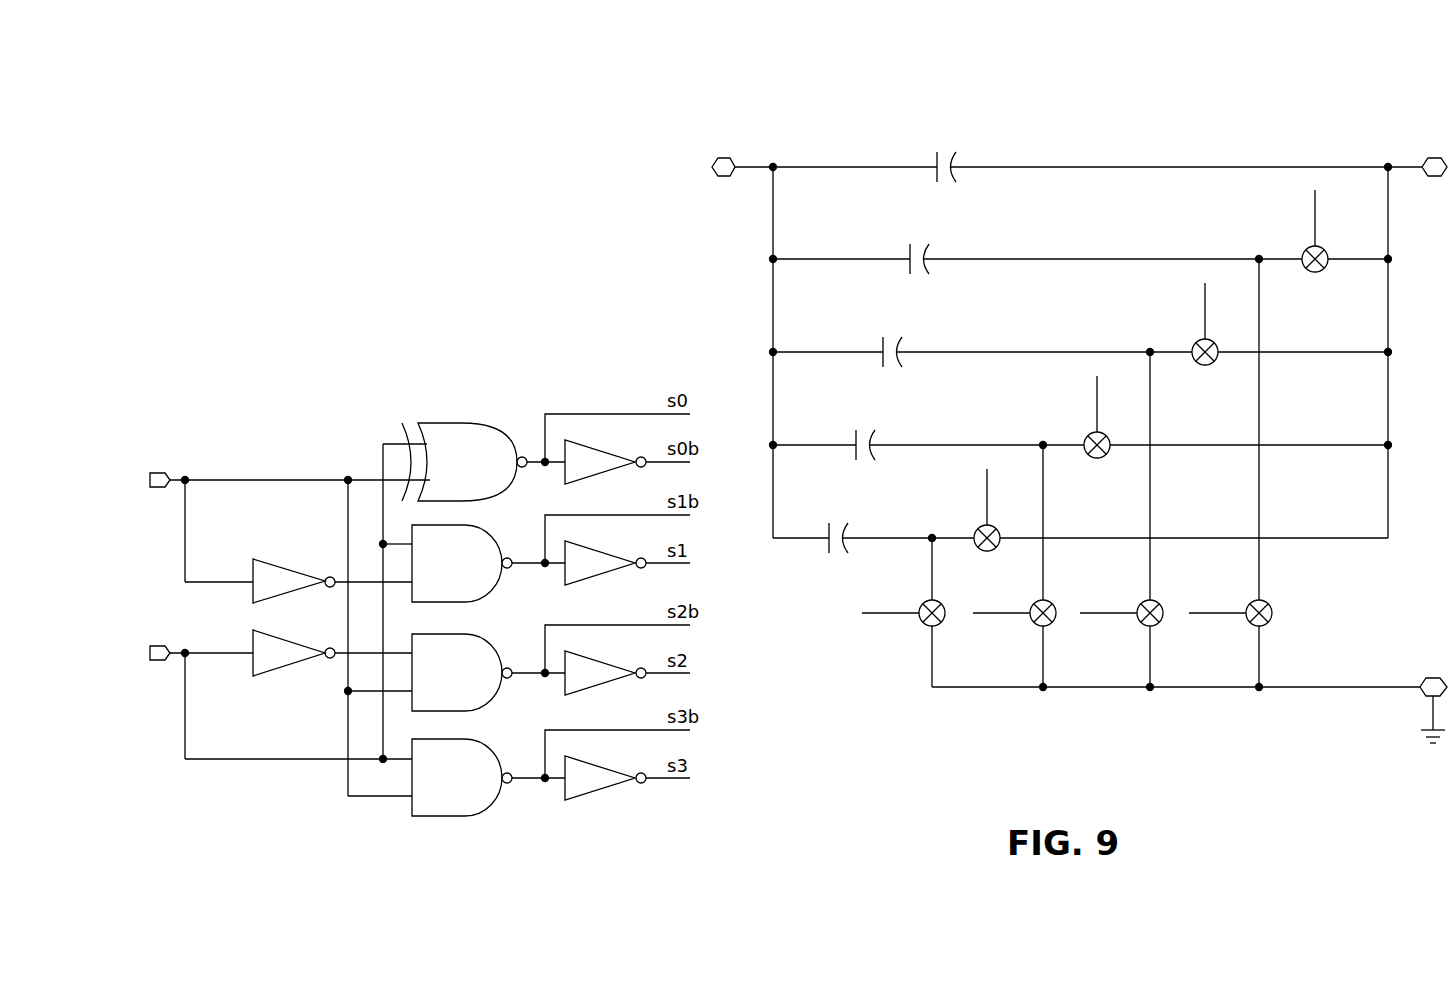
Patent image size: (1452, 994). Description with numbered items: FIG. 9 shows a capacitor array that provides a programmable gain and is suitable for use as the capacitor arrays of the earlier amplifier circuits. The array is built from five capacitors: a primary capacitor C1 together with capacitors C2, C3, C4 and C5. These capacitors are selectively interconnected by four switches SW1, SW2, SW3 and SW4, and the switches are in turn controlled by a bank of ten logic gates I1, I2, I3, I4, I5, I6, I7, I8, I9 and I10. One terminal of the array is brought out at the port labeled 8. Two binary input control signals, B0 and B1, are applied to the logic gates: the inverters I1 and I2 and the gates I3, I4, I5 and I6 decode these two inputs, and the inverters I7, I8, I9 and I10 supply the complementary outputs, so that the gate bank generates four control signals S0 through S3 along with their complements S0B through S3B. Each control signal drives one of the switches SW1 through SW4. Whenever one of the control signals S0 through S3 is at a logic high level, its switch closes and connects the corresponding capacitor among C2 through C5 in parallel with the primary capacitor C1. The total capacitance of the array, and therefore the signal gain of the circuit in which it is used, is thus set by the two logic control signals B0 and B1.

The input port 8 is at (742, 158).
The primary capacitor C1 is at (1080, 161).
The capacitor C2 is at (1080, 253).
The capacitor C3 is at (1080, 346).
The capacitor C4 is at (1080, 439).
The capacitor C5 is at (1080, 532).
The switch SW1 is at (1270, 427).
The switch SW2 is at (1160, 473).
The switch SW3 is at (1053, 520).
The switch SW4 is at (942, 566).
The logic gate I1 is at (267, 582).
The logic gate I2 is at (267, 651).
The logic gate I3 is at (464, 458).
The logic gate I4 is at (464, 561).
The logic gate I5 is at (464, 671).
The logic gate I6 is at (464, 775).
The logic gate I7 is at (623, 464).
The logic gate I8 is at (623, 564).
The logic gate I9 is at (623, 675).
The logic gate I10 is at (623, 780).